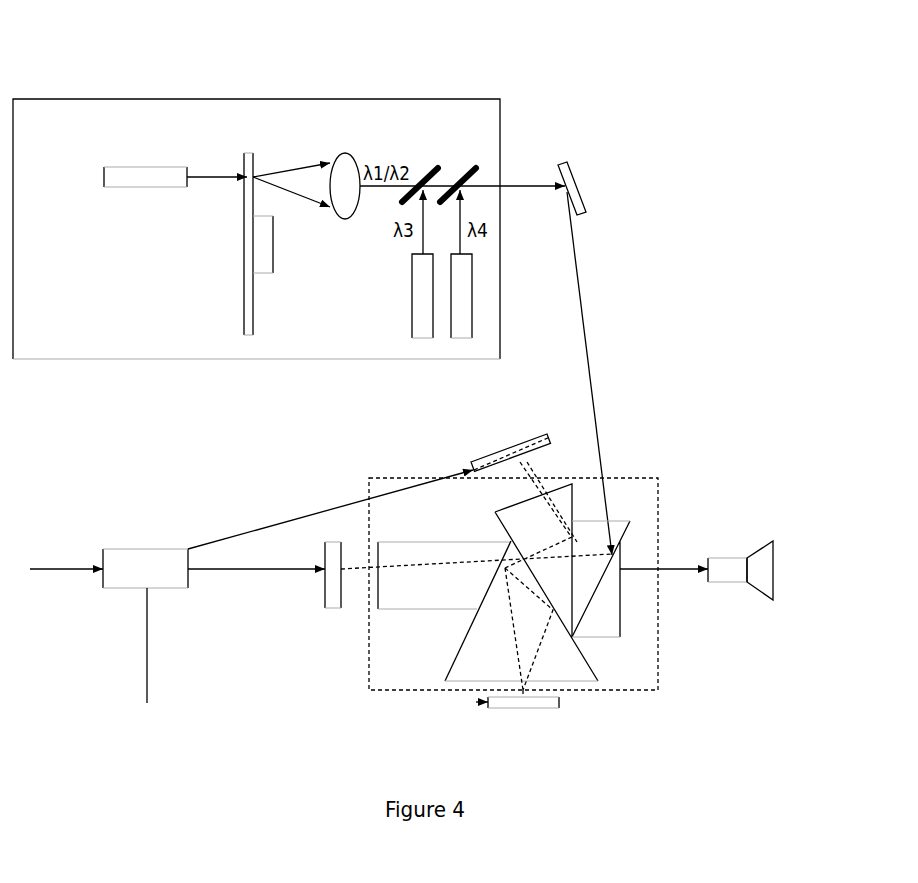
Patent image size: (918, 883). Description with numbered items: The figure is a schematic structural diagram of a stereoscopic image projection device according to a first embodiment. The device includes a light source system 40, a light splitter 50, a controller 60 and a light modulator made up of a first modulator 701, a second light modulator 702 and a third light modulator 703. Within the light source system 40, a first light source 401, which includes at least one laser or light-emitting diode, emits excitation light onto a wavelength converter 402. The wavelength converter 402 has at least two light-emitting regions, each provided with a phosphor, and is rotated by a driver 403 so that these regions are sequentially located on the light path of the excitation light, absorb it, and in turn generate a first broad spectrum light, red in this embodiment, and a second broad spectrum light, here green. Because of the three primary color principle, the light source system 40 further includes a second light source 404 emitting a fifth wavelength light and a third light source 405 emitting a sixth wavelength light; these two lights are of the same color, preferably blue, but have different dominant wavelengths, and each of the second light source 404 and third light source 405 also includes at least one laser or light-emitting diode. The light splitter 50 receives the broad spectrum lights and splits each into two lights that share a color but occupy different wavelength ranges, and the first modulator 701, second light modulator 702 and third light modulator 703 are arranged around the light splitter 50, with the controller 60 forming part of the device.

The light source system 40 is at (105, 100).
The first light source 401 is at (105, 173).
The wavelength converter 402 is at (248, 297).
The driver 403 is at (268, 228).
The second light source 404 is at (415, 330).
The third light source 405 is at (458, 330).
The light splitter 50 is at (648, 487).
The controller 60 is at (112, 555).
The first modulator 701 is at (507, 452).
The second light modulator 702 is at (552, 705).
The third light modulator 703 is at (332, 603).